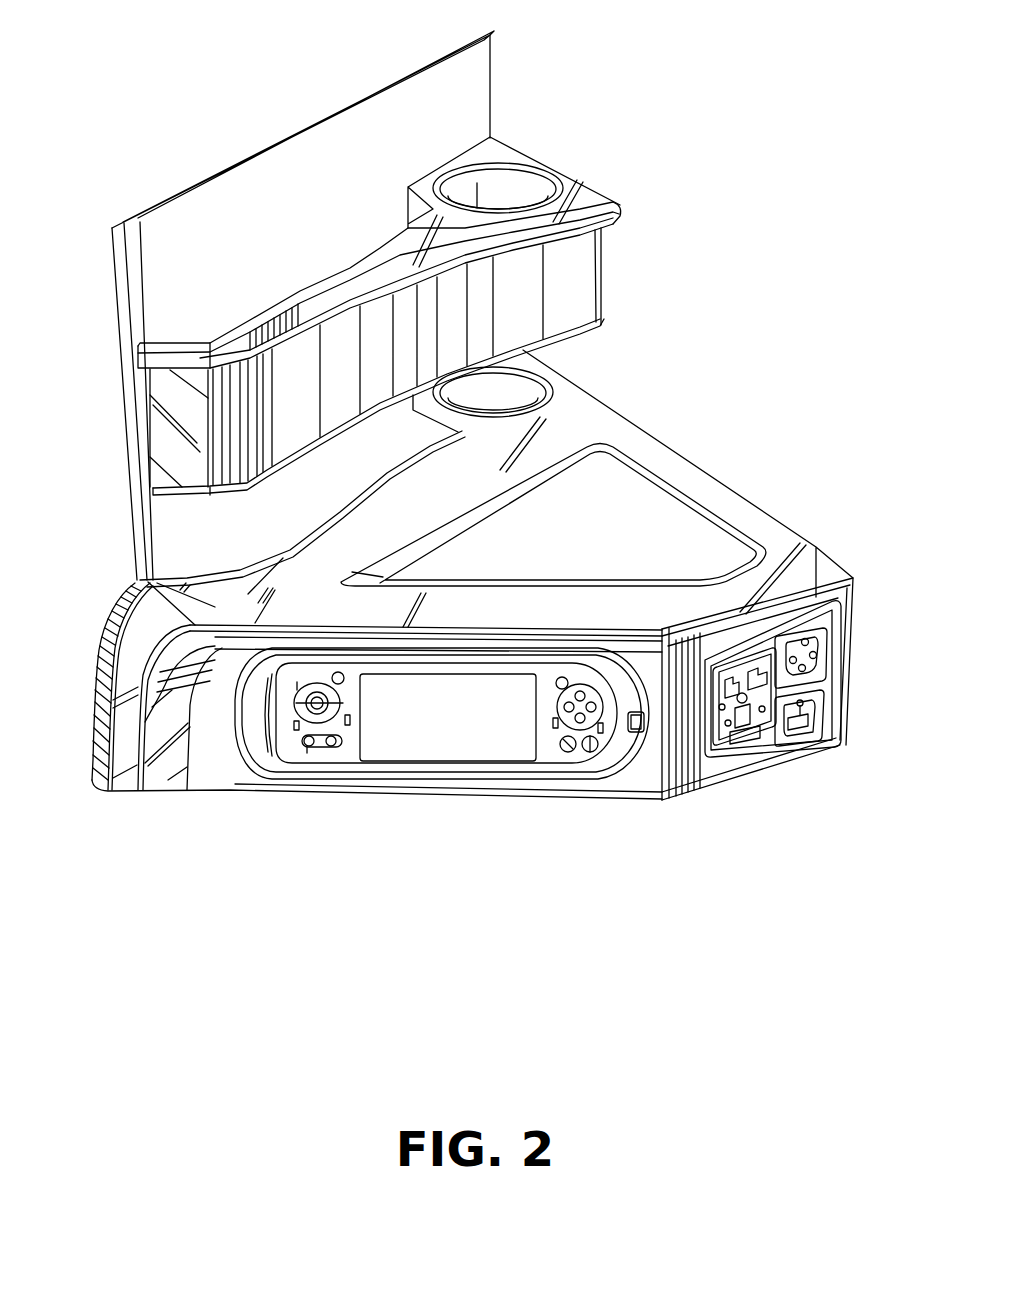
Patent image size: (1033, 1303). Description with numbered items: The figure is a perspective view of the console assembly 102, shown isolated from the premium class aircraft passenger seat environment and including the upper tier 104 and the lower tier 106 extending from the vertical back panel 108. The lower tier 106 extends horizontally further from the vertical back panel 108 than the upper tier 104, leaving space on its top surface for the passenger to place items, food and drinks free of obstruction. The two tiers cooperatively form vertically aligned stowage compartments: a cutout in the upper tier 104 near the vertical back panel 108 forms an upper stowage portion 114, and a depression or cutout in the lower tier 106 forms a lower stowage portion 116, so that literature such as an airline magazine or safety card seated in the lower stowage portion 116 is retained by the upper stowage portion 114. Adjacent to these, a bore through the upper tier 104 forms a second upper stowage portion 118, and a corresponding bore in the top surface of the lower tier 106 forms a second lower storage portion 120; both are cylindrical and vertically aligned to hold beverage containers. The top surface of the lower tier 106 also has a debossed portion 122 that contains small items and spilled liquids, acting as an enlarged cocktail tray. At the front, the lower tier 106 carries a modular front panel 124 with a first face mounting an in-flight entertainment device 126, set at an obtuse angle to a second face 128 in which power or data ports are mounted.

The console assembly 102 is at (690, 115).
The upper tier 104 is at (107, 339).
The lower tier 106 is at (873, 580).
The vertical back panel 108 is at (293, 143).
The upper stowage portion 114 is at (275, 288).
The lower stowage portion 116 is at (207, 557).
The second upper stowage portion 118 is at (511, 182).
The second lower storage portion 120 is at (527, 397).
The debossed portion 122 is at (583, 548).
The front panel 124 is at (232, 770).
The in-flight entertainment device 126 is at (550, 753).
The second face 128 is at (805, 727).